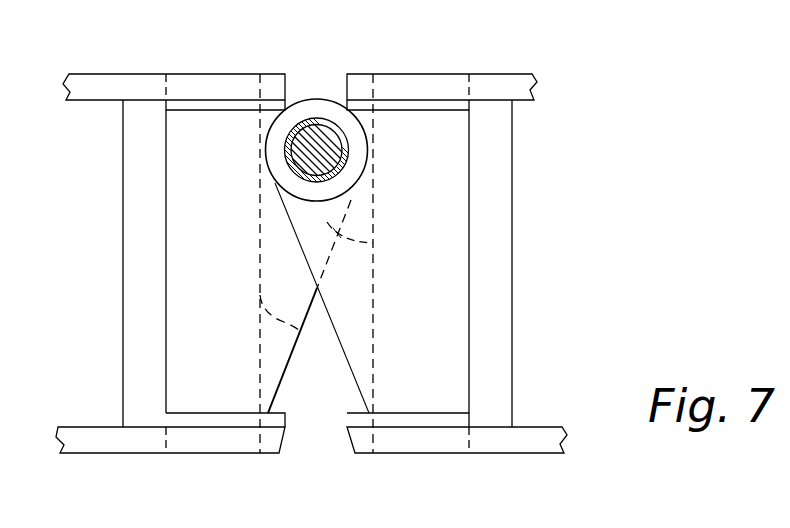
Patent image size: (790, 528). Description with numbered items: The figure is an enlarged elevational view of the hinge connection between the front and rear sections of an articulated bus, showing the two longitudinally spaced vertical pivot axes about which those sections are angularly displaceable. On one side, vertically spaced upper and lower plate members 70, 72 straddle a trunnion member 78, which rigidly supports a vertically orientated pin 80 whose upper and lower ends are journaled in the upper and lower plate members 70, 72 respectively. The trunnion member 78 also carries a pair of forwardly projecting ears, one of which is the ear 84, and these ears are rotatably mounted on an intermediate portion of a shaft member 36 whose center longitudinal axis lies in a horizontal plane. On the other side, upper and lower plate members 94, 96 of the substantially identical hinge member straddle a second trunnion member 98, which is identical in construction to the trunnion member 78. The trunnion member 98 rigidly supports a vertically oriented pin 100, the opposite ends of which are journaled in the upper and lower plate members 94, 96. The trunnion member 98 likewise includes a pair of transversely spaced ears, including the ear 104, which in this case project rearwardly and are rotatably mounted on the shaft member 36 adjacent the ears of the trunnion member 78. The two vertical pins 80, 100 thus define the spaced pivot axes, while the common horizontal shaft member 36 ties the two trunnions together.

The upper plate member 70 is at (118, 73).
The lower plate member 72 is at (170, 453).
The trunnion member 78 is at (130, 297).
The upper plate member 94 is at (457, 78).
The lower plate member 96 is at (462, 452).
The trunnion member 98 is at (506, 313).
The shaft member 36 is at (318, 142).
The pin 80 is at (296, 330).
The ear 84 is at (277, 372).
The pin 100 is at (336, 223).
The ear 104 is at (358, 375).